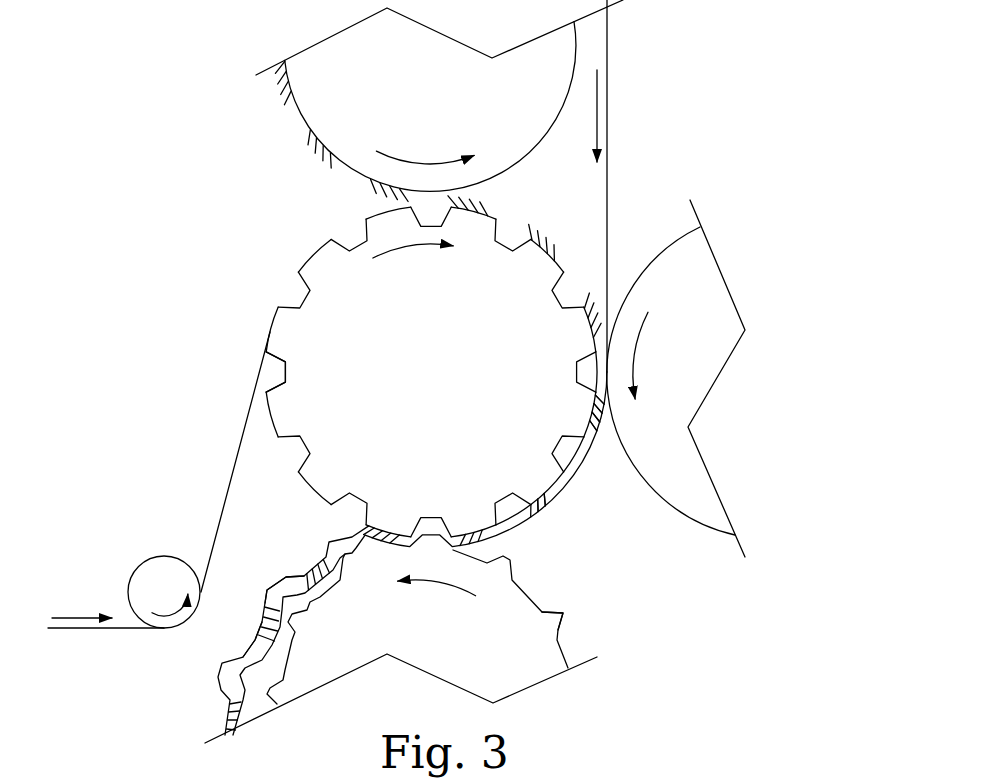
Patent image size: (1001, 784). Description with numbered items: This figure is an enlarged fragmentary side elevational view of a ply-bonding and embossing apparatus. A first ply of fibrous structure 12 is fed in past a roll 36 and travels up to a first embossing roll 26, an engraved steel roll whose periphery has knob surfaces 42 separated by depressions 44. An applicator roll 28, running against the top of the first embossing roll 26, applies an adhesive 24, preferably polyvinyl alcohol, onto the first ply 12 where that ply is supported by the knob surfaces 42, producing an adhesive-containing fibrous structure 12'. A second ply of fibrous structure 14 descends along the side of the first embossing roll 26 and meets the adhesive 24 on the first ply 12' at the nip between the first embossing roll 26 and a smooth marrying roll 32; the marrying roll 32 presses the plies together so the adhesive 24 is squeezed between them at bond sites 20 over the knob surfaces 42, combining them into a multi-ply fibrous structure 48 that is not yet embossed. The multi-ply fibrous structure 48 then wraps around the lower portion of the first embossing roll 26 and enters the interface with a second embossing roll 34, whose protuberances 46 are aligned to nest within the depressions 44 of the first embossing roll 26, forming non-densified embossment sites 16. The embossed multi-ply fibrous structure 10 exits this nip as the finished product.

The embossed multi-ply fibrous structure 10 is at (265, 600).
The first ply of fibrous structure 12 is at (106, 660).
The adhesive-containing fibrous structure 12' is at (559, 232).
The second ply of fibrous structure 14 is at (610, 153).
The embossment sites 16 is at (340, 538).
The bond sites 20 is at (313, 568).
The adhesive 24 is at (285, 93).
The first embossing roll 26 is at (445, 400).
The applicator roll 28 is at (328, 55).
The marrying roll 32 is at (722, 350).
The second embossing roll 34 is at (412, 655).
The idler roll 36 is at (175, 605).
The knob surfaces 42 is at (266, 415).
The depressions 44 is at (262, 368).
The protuberances 46 is at (567, 618).
The multi-ply fibrous structure 48 is at (517, 533).